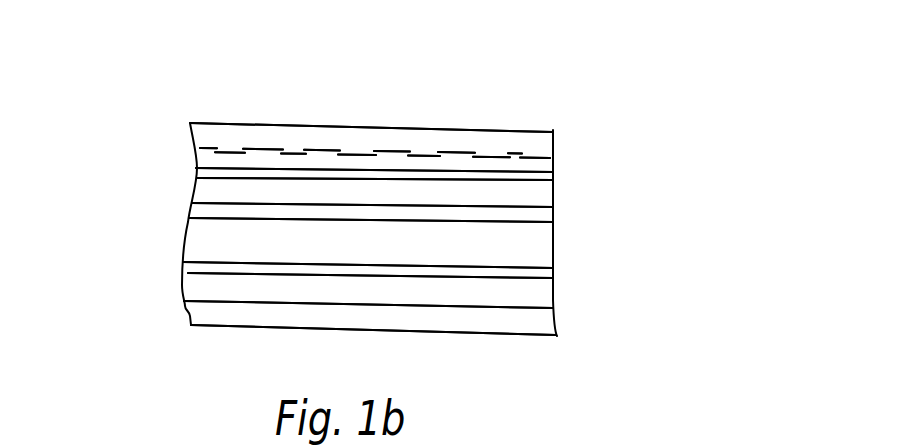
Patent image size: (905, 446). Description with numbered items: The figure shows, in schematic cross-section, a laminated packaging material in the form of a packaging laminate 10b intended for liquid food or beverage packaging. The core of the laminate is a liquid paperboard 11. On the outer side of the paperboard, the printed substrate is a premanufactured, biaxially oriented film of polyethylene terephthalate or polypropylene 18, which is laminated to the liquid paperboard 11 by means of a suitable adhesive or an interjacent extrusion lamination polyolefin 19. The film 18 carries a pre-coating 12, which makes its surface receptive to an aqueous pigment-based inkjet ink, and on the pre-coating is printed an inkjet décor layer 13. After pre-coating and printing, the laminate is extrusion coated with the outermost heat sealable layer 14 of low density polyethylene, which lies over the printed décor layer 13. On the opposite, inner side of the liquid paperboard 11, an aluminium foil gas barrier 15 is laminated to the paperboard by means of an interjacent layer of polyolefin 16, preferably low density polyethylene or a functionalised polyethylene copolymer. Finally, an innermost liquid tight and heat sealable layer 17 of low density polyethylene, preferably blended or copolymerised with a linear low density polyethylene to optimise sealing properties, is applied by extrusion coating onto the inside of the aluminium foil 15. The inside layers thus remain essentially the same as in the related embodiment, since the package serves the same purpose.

The packaging laminate 10b is at (316, 229).
The liquid paperboard 11 is at (528, 240).
The pre-coating 12 is at (553, 178).
The inkjet décor layer 13 is at (547, 163).
The outermost heat sealable layer 14 is at (553, 133).
The aluminium foil gas barrier 15 is at (547, 295).
The interjacent layer of polyolefin 16 is at (540, 277).
The innermost liquid tight and heat sealable layer 17 is at (545, 323).
The biaxially oriented film 18 is at (540, 193).
The interjacent extrusion lamination polyolefin 19 is at (205, 212).